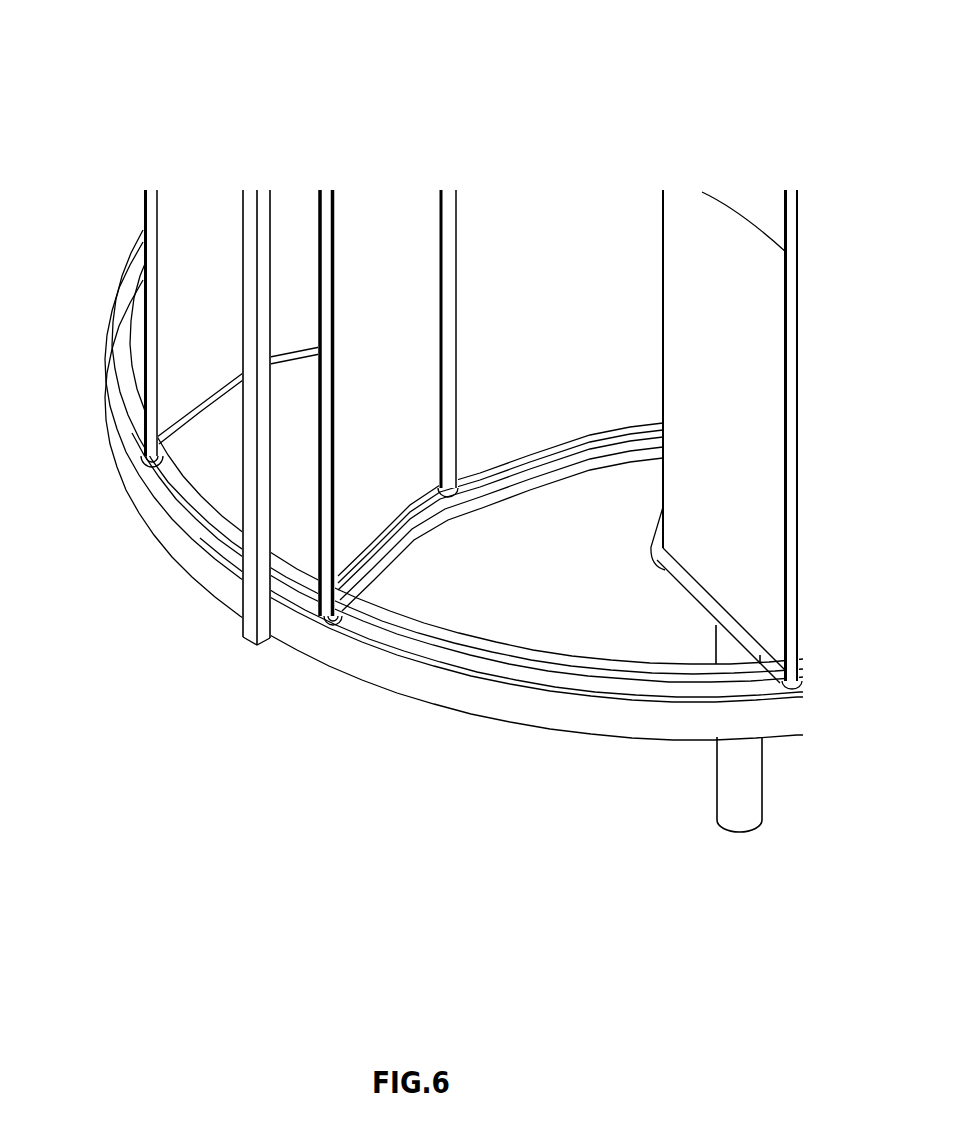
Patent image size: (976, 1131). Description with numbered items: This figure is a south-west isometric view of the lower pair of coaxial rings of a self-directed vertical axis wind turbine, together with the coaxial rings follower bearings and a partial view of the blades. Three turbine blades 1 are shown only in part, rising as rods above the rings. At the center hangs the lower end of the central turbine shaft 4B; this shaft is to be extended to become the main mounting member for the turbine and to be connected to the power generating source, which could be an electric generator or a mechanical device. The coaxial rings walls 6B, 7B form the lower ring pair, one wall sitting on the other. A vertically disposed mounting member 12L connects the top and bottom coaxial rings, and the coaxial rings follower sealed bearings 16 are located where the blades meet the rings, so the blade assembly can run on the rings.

The turbine blades 1 is at (205, 310).
The vertically disposed mounting member 12L is at (255, 217).
The coaxial rings follower sealed bearings 16 is at (148, 461).
The coaxial ring wall 7B is at (388, 673).
The coaxial ring wall 6B is at (462, 658).
The lower end of the central turbine shaft 4B is at (733, 787).